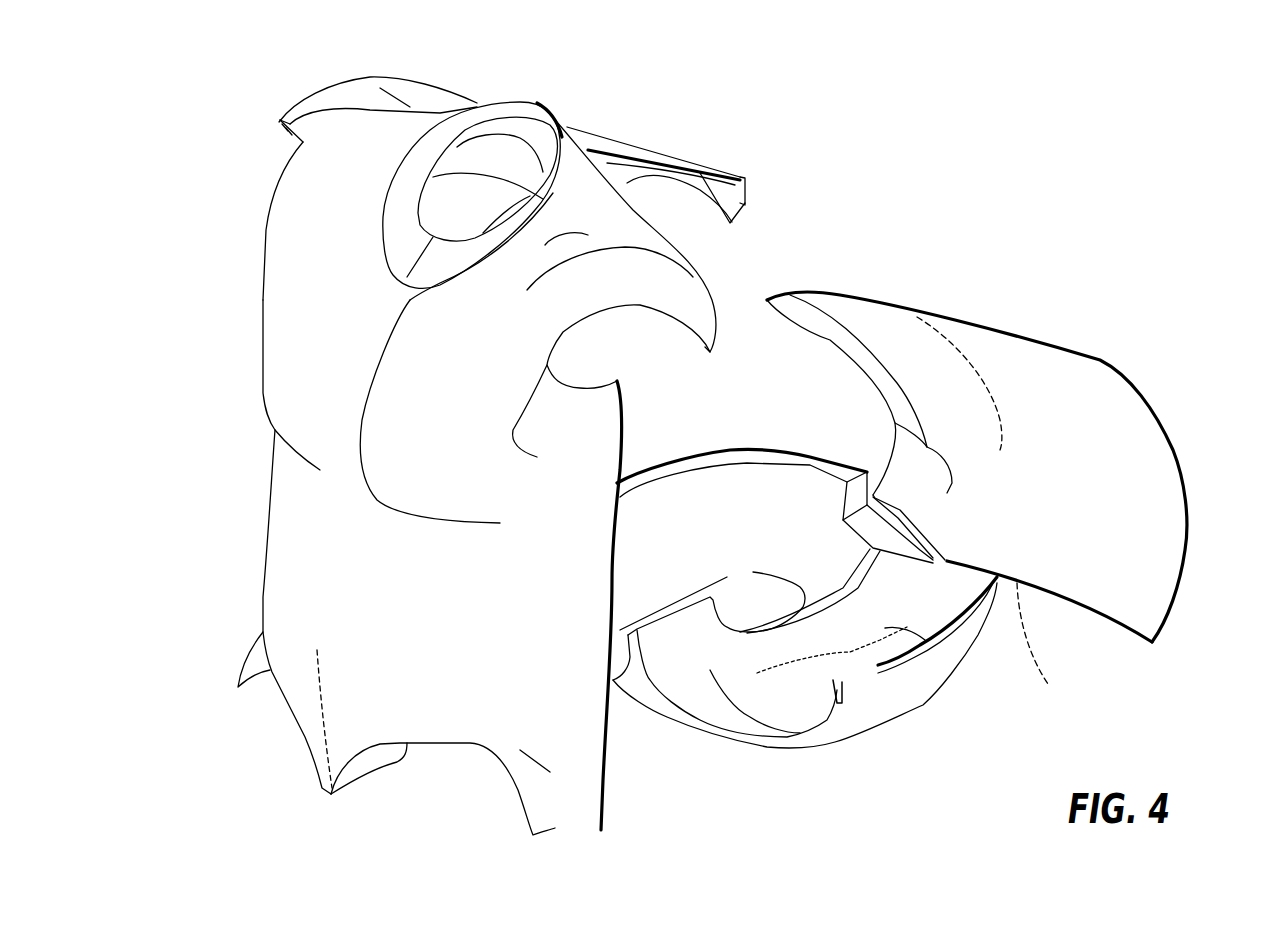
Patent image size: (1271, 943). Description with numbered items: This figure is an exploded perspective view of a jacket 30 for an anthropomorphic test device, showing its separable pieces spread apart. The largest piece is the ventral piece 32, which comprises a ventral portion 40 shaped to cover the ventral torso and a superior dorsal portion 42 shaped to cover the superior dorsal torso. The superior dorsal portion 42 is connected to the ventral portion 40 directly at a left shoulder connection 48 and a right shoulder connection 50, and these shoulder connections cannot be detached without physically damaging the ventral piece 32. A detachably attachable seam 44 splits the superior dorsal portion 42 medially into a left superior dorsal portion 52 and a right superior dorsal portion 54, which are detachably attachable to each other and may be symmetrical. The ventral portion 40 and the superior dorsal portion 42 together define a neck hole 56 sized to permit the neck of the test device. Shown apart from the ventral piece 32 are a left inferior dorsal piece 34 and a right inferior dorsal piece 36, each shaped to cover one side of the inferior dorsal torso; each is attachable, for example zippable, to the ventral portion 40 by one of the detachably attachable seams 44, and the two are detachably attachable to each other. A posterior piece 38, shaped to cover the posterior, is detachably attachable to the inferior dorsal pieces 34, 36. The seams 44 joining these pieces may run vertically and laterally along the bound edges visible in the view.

The jacket 30 is at (1022, 180).
The ventral piece 32 is at (272, 470).
The left inferior dorsal piece 34 is at (1103, 362).
The right inferior dorsal piece 36 is at (617, 137).
The posterior piece 38 is at (880, 730).
The ventral portion 40 is at (261, 353).
The superior dorsal portion 42 is at (693, 259).
The detachably attachable seam 44 is at (524, 104).
The left shoulder connection 48 is at (530, 255).
The right shoulder connection 50 is at (393, 127).
The left superior dorsal portion 52 is at (708, 292).
The right superior dorsal portion 54 is at (463, 183).
The neck hole 56 is at (470, 105).